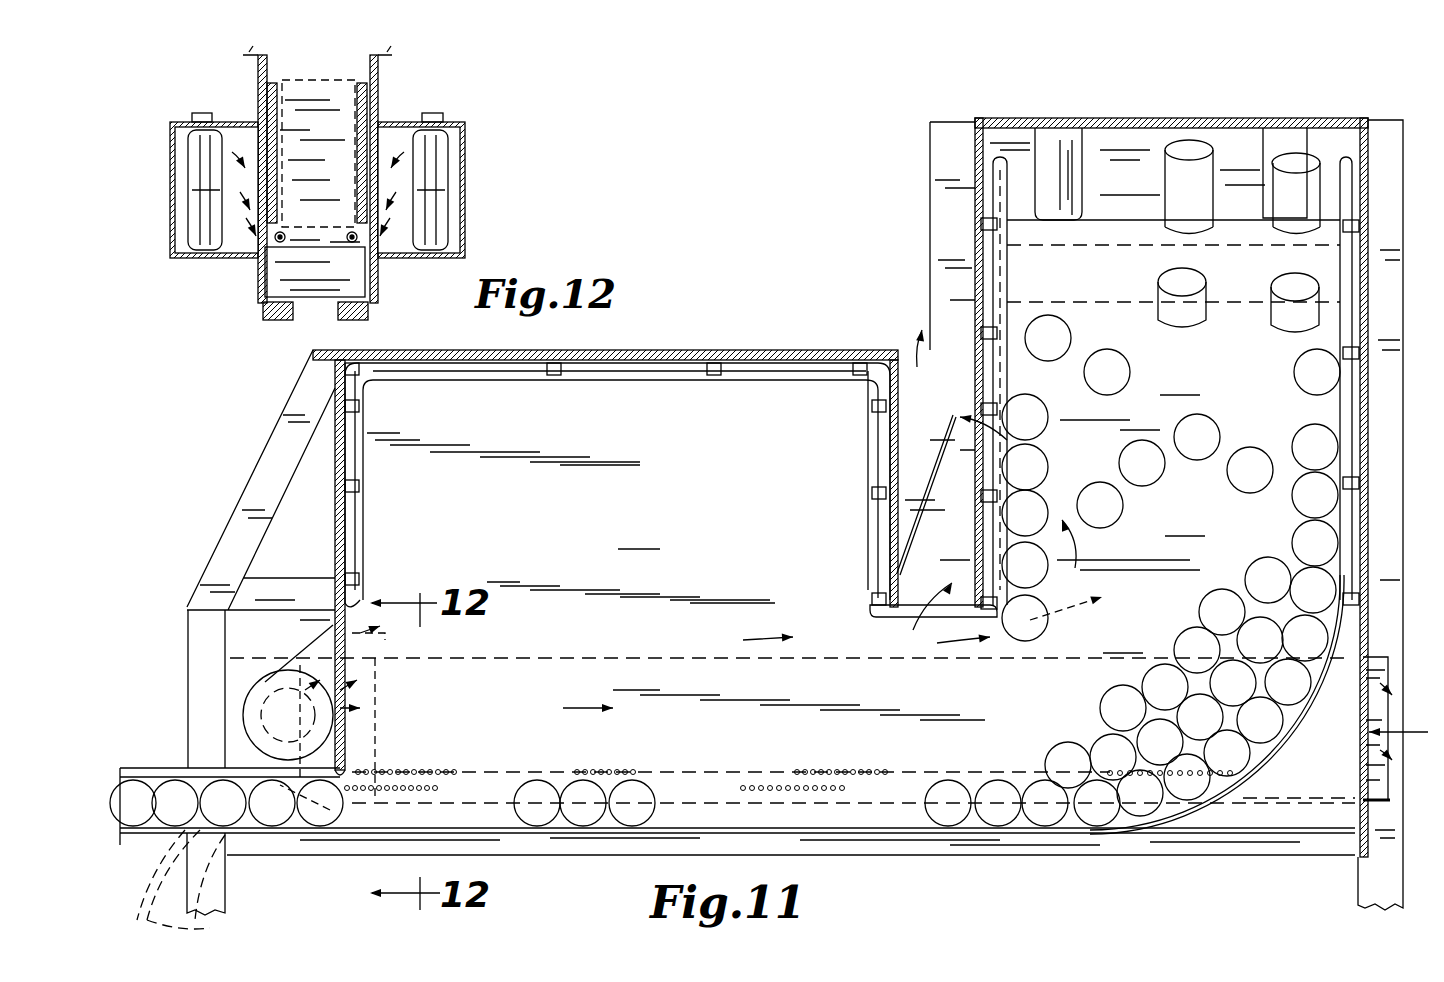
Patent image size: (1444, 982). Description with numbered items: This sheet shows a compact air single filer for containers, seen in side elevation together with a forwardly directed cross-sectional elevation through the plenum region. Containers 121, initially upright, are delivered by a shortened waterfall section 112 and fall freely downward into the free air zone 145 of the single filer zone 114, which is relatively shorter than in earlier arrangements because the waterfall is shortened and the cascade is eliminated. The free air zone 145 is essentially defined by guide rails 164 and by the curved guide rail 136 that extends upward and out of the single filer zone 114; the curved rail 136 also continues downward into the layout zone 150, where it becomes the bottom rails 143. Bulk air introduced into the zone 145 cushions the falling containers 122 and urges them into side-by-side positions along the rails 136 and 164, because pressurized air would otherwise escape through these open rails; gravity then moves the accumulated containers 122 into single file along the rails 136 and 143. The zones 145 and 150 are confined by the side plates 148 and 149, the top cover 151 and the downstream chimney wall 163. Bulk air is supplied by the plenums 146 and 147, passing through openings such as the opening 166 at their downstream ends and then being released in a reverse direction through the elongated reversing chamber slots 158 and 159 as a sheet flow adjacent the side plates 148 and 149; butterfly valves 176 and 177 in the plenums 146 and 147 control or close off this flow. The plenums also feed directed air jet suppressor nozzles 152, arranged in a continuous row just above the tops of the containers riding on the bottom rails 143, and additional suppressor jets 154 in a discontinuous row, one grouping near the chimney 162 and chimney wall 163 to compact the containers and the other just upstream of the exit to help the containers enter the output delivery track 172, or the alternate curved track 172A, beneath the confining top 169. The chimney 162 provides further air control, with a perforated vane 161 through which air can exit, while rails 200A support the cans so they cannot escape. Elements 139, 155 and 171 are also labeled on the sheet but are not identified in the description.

In FIG. 11, the waterfall section 112 is at (1368, 160).
In FIG. 11, the single filer zone 114 is at (1123, 642).
In FIG. 11, the containers 121 is at (1300, 128).
In FIG. 11, the containers 122 is at (1294, 372).
In FIG. 11, the curved guide rail 136 is at (1265, 752).
In FIG. 11, the accumulated articles 139 is at (1073, 825).
In FIG. 11, the bottom rails 143 is at (822, 823).
In FIG. 11, the free air zone 145 is at (1131, 495).
In FIG. 12, the plenum 146 is at (455, 142).
In FIG. 11, the plenum 146 is at (1378, 655).
In FIG. 12, the plenum 147 is at (180, 192).
In FIG. 12, the side plate 148 is at (378, 105).
In FIG. 11, the side plate 148 is at (1238, 332).
In FIG. 12, the side plate 149 is at (257, 140).
In FIG. 11, the layout zone 150 is at (605, 562).
In FIG. 11, the top cover 151 is at (713, 350).
In FIG. 12, the directed air jet suppressor nozzles 152 is at (355, 222).
In FIG. 11, the directed air jet suppressor nozzles 152 is at (430, 768).
In FIG. 12, the additional air jet suppressor nozzles 154 is at (385, 255).
In FIG. 11, the additional air jet suppressor nozzles 154 is at (440, 788).
In FIG. 12, the base block 155 is at (252, 262).
In FIG. 12, the elongated reversing chamber slot 158 is at (357, 112).
In FIG. 11, the elongated reversing chamber slot 158 is at (310, 665).
In FIG. 12, the elongated reversing chamber slot 159 is at (267, 173).
In FIG. 11, the vane 161 is at (925, 518).
In FIG. 11, the chimney 162 is at (928, 377).
In FIG. 11, the downstream chimney wall 163 is at (870, 472).
In FIG. 11, the guide rails 164 is at (1000, 297).
In FIG. 11, the opening 166 is at (277, 685).
In FIG. 11, the confining top 169 is at (327, 760).
In FIG. 11, the guide line 171 is at (295, 830).
In FIG. 11, the output delivery track 172 is at (153, 780).
In FIG. 11, the alternate curved track 172A is at (175, 875).
In FIG. 12, the butterfly valve 176 is at (445, 165).
In FIG. 11, the butterfly valve 176 is at (375, 675).
In FIG. 12, the butterfly valve 177 is at (190, 142).
In FIG. 11, the rails 200A is at (868, 617).